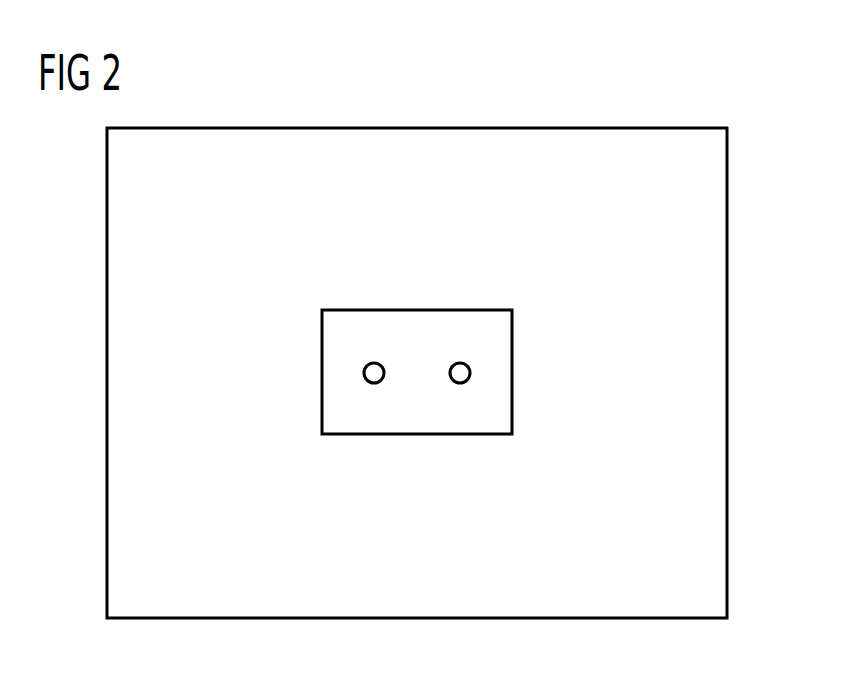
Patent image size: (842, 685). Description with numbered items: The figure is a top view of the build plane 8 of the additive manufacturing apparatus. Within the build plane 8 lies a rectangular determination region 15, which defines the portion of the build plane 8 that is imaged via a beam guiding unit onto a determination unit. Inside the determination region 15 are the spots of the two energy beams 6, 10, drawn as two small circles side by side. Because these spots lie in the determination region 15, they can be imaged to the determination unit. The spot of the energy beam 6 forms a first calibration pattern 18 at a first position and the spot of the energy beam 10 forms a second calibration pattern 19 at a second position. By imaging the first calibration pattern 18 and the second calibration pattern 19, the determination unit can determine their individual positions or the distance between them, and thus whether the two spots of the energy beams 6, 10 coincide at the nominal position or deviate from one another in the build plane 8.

The build plane 8 is at (470, 156).
The determination region 15 is at (413, 310).
The energy beam 6 is at (371, 377).
The energy beam 10 is at (463, 377).
The first calibration pattern 18 is at (370, 396).
The second calibration pattern 19 is at (463, 396).